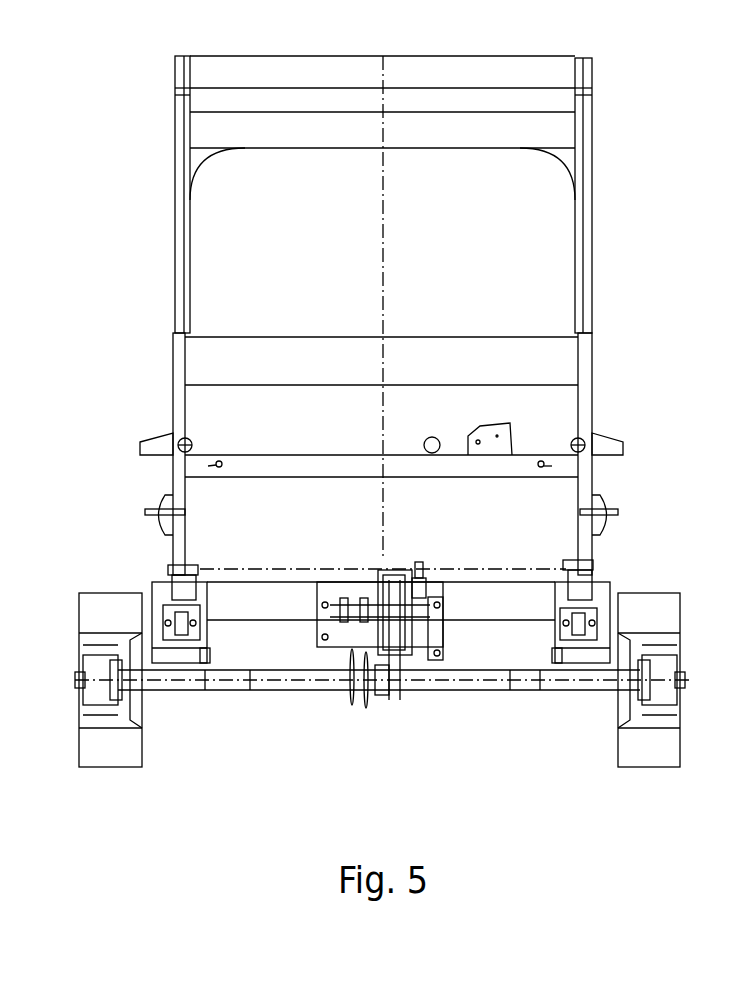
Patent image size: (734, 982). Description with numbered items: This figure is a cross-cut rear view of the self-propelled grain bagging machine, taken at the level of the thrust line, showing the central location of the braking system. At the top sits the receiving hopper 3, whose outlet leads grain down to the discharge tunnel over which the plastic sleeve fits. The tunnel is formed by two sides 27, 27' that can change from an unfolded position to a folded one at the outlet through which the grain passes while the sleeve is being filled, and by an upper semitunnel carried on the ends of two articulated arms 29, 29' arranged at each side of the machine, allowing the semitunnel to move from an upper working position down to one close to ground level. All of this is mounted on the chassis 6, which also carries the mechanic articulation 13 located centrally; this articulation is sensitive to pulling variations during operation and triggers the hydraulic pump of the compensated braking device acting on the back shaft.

The receiving hopper 3 is at (535, 70).
The articulated arm 29 is at (123, 194).
The articulated arm 29' is at (636, 195).
The side of the discharge tunnel 27 is at (127, 466).
The side of the discharge tunnel 27' is at (626, 466).
The chassis 6 is at (600, 593).
The mechanic articulation 13 is at (412, 645).